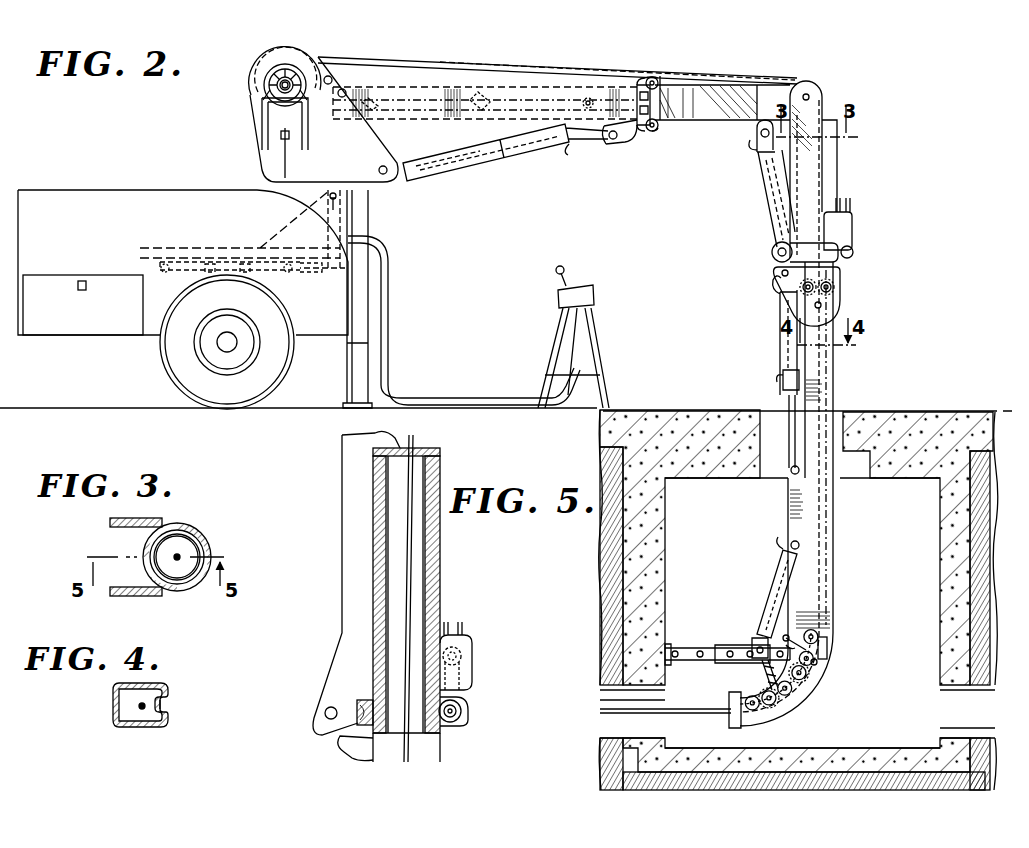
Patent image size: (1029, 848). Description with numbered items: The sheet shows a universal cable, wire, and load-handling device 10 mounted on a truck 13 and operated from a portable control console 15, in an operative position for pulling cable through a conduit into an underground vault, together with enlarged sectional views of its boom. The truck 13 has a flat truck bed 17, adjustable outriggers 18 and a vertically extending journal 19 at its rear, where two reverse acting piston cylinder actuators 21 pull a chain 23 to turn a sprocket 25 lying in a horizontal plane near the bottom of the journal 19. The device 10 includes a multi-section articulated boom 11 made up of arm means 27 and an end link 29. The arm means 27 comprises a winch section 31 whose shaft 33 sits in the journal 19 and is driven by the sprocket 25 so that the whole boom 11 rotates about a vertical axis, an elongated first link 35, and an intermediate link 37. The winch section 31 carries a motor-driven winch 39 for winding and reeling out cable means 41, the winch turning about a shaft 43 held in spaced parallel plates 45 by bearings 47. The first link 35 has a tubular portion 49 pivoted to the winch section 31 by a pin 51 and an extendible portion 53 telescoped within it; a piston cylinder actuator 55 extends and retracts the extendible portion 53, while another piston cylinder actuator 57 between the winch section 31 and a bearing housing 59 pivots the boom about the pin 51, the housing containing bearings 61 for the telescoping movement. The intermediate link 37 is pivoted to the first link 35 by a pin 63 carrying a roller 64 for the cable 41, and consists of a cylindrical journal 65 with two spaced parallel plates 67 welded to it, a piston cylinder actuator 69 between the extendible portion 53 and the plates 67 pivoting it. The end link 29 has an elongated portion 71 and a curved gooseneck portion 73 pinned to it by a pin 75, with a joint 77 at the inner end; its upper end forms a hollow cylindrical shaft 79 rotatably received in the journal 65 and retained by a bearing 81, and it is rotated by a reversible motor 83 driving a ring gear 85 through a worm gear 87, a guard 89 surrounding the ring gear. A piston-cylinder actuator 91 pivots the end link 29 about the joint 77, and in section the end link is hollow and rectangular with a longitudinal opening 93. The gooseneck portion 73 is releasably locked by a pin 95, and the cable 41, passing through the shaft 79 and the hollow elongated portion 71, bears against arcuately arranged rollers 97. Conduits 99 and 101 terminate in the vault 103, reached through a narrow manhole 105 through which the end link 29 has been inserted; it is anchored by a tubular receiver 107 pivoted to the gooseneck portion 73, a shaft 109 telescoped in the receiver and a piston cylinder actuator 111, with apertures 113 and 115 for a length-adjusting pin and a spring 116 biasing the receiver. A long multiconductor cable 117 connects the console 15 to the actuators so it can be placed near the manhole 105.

In FIG. 2, the universal cable, wire, and load-handling device 10 is at (566, 376).
In FIG. 2, the multi-section articulated boom 11 is at (557, 95).
In FIG. 2, the truck 13 is at (71, 188).
In FIG. 2, the portable control console 15 is at (594, 290).
In FIG. 2, the truck bed 17 is at (197, 235).
In FIG. 2, the outriggers 18 is at (348, 372).
In FIG. 2, the journal 19 is at (328, 237).
In FIG. 2, the reverse acting piston cylinder actuators 21 is at (182, 276).
In FIG. 2, the chain 23 is at (318, 272).
In FIG. 2, the sprocket 25 is at (328, 273).
In FIG. 2, the arm means 27 is at (568, 89).
In FIG. 2, the end link 29 is at (816, 495).
In FIG. 4, the end link 29 is at (113, 710).
In FIG. 2, the winch section 31 is at (292, 107).
In FIG. 2, the shaft 33 is at (345, 203).
In FIG. 2, the first link 35 is at (443, 122).
In FIG. 2, the intermediate link 37 is at (843, 177).
In FIG. 2, the winch 39 is at (277, 65).
In FIG. 2, the cable means 41 is at (441, 60).
In FIG. 3, the cable means 41 is at (181, 557).
In FIG. 4, the cable means 41 is at (146, 707).
In FIG. 5, the cable means 41 is at (416, 440).
In FIG. 2, the shaft 43 is at (280, 85).
In FIG. 2, the spaced parallel plates 45 is at (275, 156).
In FIG. 2, the bearings 47 is at (269, 90).
In FIG. 2, the tubular portion 49 is at (505, 83).
In FIG. 2, the pin 51 is at (352, 76).
In FIG. 2, the extendible portion 53 is at (698, 110).
In FIG. 2, the piston cylinder actuator 55 is at (428, 84).
In FIG. 2, the piston cylinder actuator 57 is at (478, 156).
In FIG. 2, the bearing housing 59 is at (625, 139).
In FIG. 2, the bearings 61 is at (664, 55).
In FIG. 2, the pin 63 is at (812, 92).
In FIG. 2, the roller 64 is at (812, 80).
In FIG. 2, the journal 65 is at (835, 152).
In FIG. 3, the journal 65 is at (190, 548).
In FIG. 5, the journal 65 is at (373, 493).
In FIG. 2, the spaced parallel plates 67 is at (806, 191).
In FIG. 3, the spaced parallel plates 67 is at (130, 528).
In FIG. 5, the spaced parallel plates 67 is at (340, 595).
In FIG. 2, the piston cylinder actuator 69 is at (763, 170).
In FIG. 2, the elongated portion 71 is at (830, 400).
In FIG. 2, the gooseneck portion 73 is at (795, 706).
In FIG. 2, the pin 75 is at (828, 660).
In FIG. 2, the joint 77 is at (822, 305).
In FIG. 3, the hollow cylindrical shaft 79 is at (186, 589).
In FIG. 5, the hollow cylindrical shaft 79 is at (441, 556).
In FIG. 5, the bearing 81 is at (441, 452).
In FIG. 5, the reversible motor 83 is at (473, 662).
In FIG. 5, the ring gear 85 is at (366, 700).
In FIG. 2, the worm gear 87 is at (854, 252).
In FIG. 5, the worm gear 87 is at (462, 716).
In FIG. 5, the guard 89 is at (325, 706).
In FIG. 2, the piston-cylinder actuator 91 is at (779, 333).
In FIG. 4, the longitudinal opening 93 is at (168, 696).
In FIG. 2, the pin 95 is at (790, 640).
In FIG. 2, the rollers 97 is at (809, 676).
In FIG. 2, the conduit 99 is at (648, 735).
In FIG. 2, the conduit 101 is at (952, 740).
In FIG. 2, the underground vault 103 is at (941, 553).
In FIG. 2, the manhole 105 is at (773, 428).
In FIG. 2, the receiver 107 is at (727, 656).
In FIG. 2, the shaft 109 is at (699, 632).
In FIG. 2, the piston cylinder actuator 111 is at (770, 580).
In FIG. 2, the apertures 113 is at (735, 663).
In FIG. 2, the apertures 115 is at (700, 661).
In FIG. 2, the spring 116 is at (762, 672).
In FIG. 2, the multiconductor cable 117 is at (390, 380).